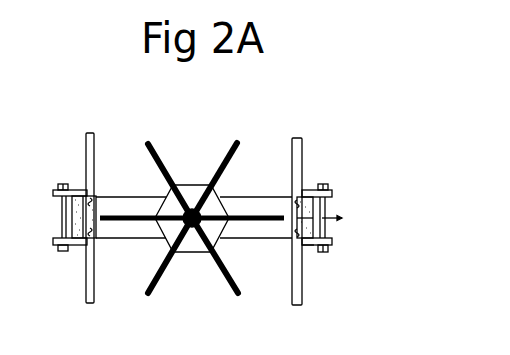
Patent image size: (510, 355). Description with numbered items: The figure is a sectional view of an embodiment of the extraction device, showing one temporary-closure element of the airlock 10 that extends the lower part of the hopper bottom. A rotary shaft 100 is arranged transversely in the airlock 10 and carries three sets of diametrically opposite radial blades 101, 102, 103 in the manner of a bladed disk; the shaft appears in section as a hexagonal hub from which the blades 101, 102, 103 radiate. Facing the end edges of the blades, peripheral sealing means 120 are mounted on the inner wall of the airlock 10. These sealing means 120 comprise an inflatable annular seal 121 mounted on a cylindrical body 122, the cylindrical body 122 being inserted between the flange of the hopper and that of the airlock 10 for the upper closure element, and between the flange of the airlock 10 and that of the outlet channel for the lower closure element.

The airlock 10 is at (302, 156).
The rotary shaft 100 is at (190, 198).
The blades 101 is at (238, 144).
The blades 102 is at (146, 148).
The blades 103 is at (134, 222).
The peripheral sealing means 120 is at (323, 205).
The inflatable annular seal 121 is at (300, 246).
The cylindrical body 122 is at (328, 251).